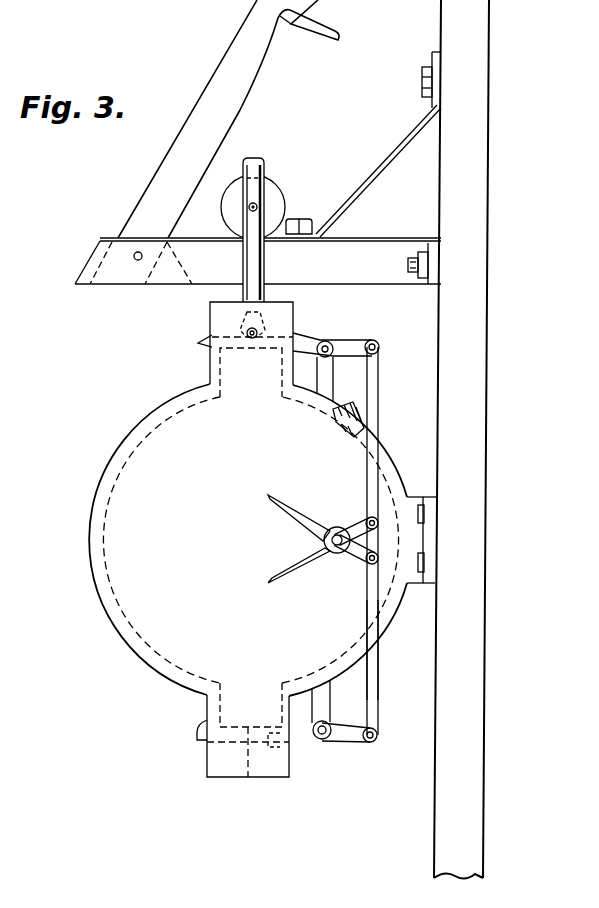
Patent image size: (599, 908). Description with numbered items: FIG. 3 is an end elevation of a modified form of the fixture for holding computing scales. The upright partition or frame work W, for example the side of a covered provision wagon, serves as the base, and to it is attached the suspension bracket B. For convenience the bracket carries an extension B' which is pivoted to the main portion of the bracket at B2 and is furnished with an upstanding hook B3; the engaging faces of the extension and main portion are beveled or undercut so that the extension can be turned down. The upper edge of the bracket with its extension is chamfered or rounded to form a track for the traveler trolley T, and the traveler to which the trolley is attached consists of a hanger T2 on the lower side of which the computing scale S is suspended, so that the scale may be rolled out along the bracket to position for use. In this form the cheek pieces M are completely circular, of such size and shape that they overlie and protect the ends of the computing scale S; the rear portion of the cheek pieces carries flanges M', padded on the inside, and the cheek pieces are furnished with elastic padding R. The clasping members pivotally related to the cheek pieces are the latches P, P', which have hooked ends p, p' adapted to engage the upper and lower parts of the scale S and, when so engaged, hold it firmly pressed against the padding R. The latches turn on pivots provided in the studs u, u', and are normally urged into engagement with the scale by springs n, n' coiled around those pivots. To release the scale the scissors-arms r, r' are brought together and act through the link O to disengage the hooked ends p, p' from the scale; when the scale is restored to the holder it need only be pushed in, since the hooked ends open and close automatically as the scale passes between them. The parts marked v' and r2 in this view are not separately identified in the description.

The upright partition W is at (478, 428).
The suspension bracket B is at (258, 168).
The extension B' is at (204, 119).
The pivot B2 is at (135, 260).
The upstanding hook B3 is at (290, 23).
The traveler trolley T is at (272, 188).
The hanger T2 is at (253, 157).
The cheek pieces M is at (213, 539).
The flanges M' is at (395, 473).
The computing scale S is at (112, 482).
The elastic padding R is at (362, 417).
The hooked end p is at (255, 359).
The hooked end p' is at (257, 735).
The spring n is at (315, 328).
The spring n' is at (310, 767).
The latch P is at (369, 326).
The latch P' is at (365, 760).
The stud u is at (301, 397).
The stud u' is at (363, 701).
The link O is at (373, 440).
The vertical rod v' is at (390, 650).
The scissors-arm r is at (323, 513).
The scissors-arm r' is at (323, 573).
The pivot hub of star lever r2 is at (332, 547).